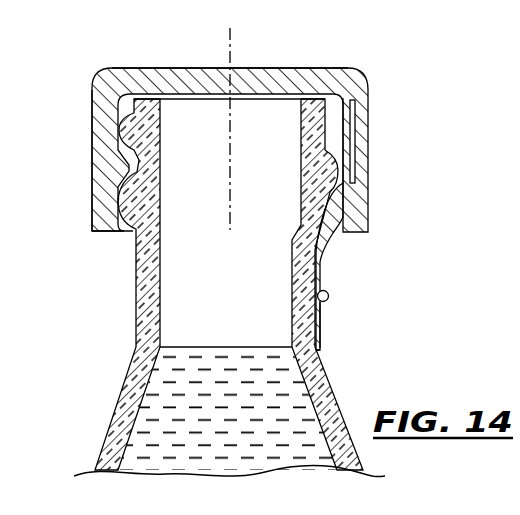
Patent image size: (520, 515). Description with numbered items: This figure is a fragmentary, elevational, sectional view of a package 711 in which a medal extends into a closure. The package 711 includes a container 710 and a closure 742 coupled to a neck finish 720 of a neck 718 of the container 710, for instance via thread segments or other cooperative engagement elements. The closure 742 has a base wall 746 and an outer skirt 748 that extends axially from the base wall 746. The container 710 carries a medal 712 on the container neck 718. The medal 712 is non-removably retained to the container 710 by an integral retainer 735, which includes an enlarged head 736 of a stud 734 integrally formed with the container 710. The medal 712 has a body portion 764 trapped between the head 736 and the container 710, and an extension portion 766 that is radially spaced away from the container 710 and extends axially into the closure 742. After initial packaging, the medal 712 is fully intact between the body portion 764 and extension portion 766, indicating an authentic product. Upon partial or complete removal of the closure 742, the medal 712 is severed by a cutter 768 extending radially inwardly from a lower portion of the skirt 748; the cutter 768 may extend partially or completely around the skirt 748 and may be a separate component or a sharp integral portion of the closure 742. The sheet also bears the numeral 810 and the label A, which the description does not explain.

The package 711 is at (125, 50).
The closure 742 is at (254, 204).
The base wall 746 is at (253, 76).
The outer skirt 748 is at (96, 119).
The cutter 768 is at (125, 238).
The neck finish 720 is at (336, 112).
The extension portion 766 is at (354, 130).
The medal 712 is at (362, 283).
The enlarged head 736 is at (328, 295).
The integral retainer 735 is at (333, 302).
The stud 734 is at (325, 306).
The body portion 764 is at (322, 346).
The neck 718 is at (125, 322).
The container 710 is at (207, 288).
The adjacent figure element 810 is at (503, 366).
The central axis A is at (239, 125).